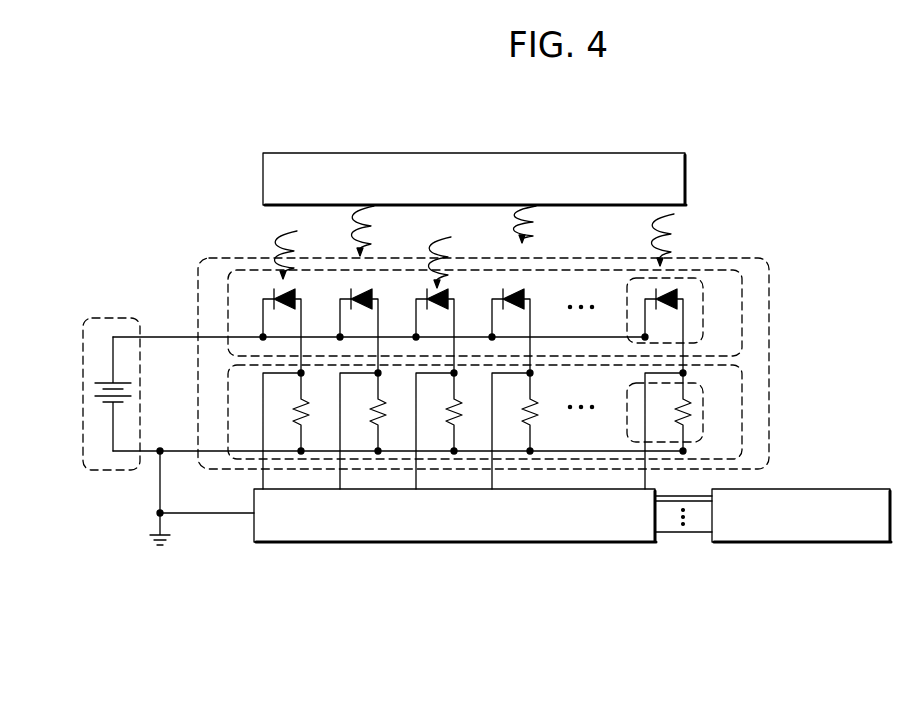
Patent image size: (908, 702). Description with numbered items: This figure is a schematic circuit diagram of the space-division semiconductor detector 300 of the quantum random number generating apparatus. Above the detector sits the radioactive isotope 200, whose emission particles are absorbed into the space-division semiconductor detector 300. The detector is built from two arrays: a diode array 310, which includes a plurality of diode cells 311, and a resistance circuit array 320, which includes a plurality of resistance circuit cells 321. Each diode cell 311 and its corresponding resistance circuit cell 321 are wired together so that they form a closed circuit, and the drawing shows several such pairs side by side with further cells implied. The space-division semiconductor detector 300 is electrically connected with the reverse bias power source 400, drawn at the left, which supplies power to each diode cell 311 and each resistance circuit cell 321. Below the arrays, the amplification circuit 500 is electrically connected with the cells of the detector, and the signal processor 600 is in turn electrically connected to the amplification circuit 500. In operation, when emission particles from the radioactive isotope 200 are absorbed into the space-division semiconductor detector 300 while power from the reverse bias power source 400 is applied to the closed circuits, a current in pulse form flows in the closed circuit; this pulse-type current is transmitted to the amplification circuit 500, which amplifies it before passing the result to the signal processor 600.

The radioactive isotope 200 is at (263, 179).
The space-division semiconductor detector 300 is at (735, 258).
The diode array 310 is at (742, 330).
The diode cell 311 is at (703, 300).
The resistance circuit array 320 is at (742, 432).
The resistance circuit cell 321 is at (703, 400).
The reverse bias power source 400 is at (110, 318).
The amplification circuit 500 is at (455, 542).
The signal processor 600 is at (798, 542).